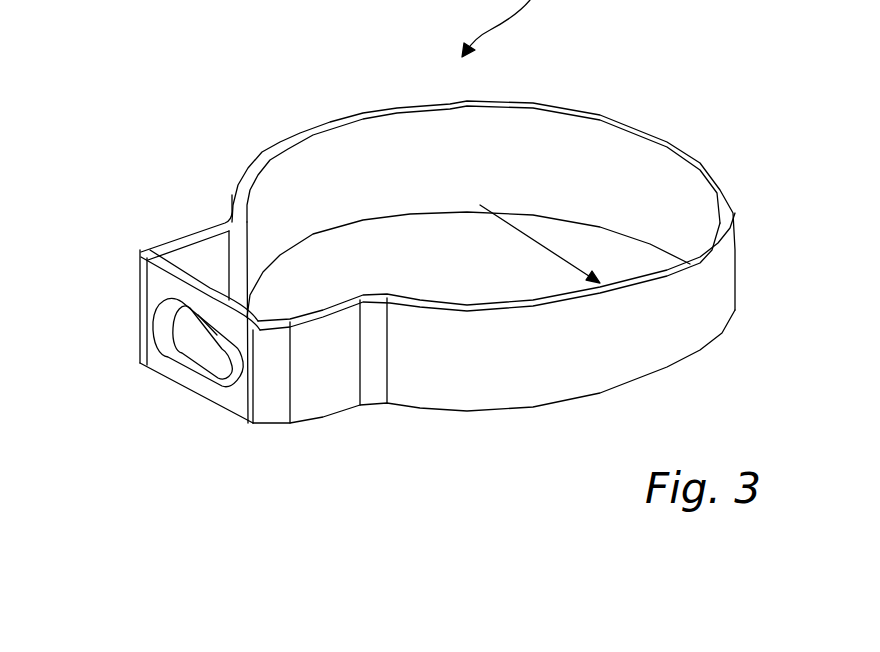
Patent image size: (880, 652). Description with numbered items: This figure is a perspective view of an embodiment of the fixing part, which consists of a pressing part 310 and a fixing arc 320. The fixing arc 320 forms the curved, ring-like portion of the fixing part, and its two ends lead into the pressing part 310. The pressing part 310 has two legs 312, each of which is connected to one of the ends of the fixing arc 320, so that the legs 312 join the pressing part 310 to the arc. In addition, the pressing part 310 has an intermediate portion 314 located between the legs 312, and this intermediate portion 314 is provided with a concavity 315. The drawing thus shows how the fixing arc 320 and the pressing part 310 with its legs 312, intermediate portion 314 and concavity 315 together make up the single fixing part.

The pressing part 310 is at (399, 257).
The legs 312 is at (199, 257).
The intermediate portion 314 is at (190, 378).
The concavity 315 is at (218, 348).
The fixing arc 320 is at (667, 176).